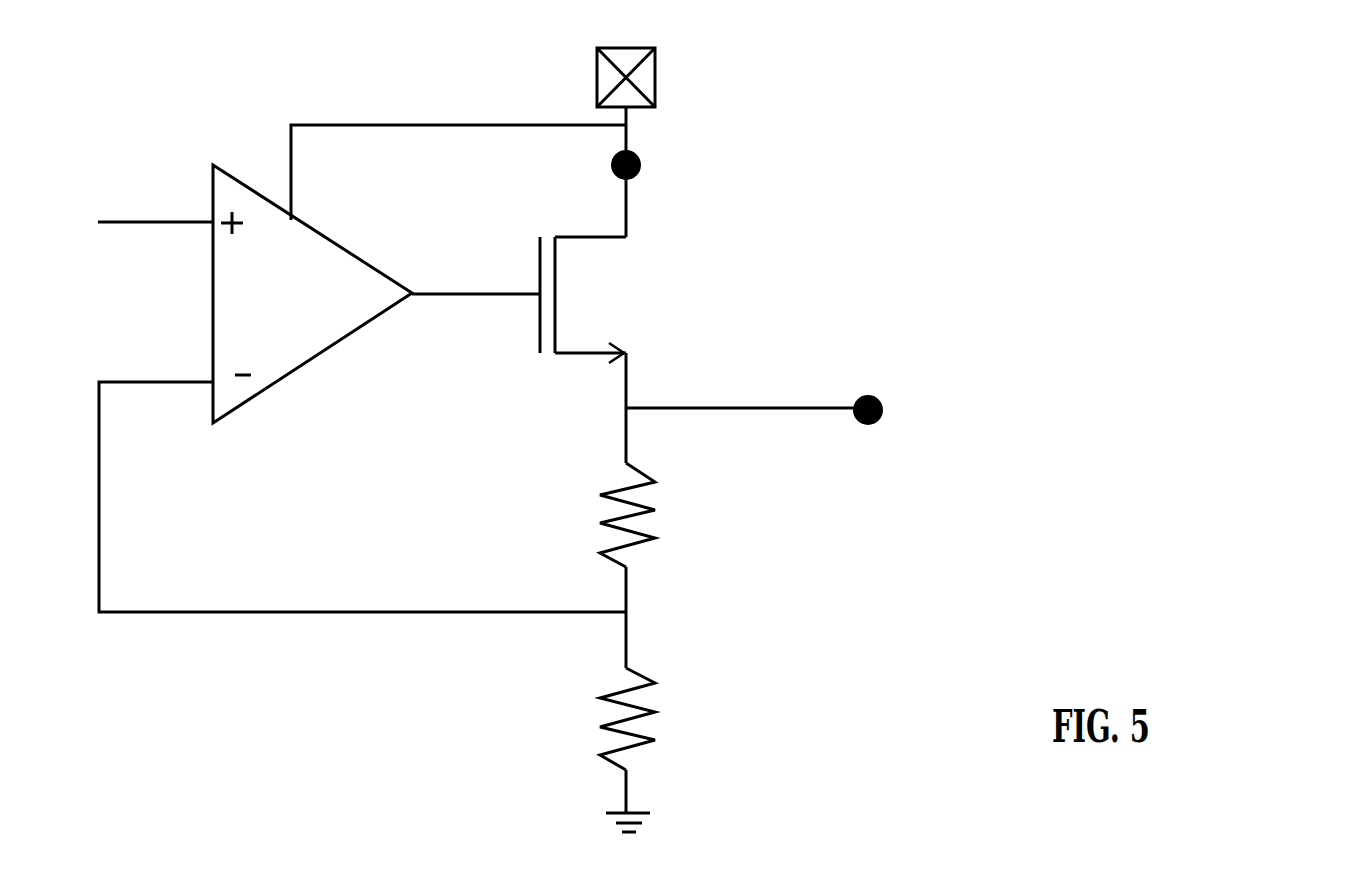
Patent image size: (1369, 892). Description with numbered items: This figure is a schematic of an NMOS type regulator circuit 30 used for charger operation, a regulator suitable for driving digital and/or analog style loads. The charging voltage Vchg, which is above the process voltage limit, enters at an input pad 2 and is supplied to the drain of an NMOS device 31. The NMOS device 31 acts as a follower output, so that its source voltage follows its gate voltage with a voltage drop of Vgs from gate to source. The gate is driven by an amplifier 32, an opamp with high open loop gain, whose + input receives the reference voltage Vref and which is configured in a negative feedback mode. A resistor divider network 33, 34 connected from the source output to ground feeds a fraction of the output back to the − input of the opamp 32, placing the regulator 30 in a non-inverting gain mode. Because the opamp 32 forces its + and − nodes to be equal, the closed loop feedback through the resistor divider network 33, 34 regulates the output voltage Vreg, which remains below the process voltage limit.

The charge voltage (Vchg) input pad 2 is at (597, 82).
The NMOS regulator circuit 30 is at (853, 311).
The NMOS device 31 is at (535, 281).
The amplifier 32 is at (253, 188).
The resistor divider network resistor 33 is at (612, 518).
The resistor divider network resistor 34 is at (612, 720).